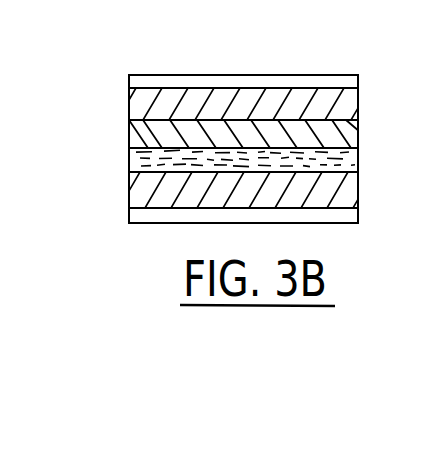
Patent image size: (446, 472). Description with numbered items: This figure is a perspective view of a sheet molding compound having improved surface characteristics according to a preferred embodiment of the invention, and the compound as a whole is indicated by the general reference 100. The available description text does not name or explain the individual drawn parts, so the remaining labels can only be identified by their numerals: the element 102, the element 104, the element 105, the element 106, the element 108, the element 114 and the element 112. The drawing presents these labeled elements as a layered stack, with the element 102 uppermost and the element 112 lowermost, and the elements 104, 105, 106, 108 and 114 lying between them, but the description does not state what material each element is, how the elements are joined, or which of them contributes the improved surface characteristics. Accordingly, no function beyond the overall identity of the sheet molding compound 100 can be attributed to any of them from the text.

The laminated structure 100 is at (271, 48).
The top layer 102 is at (357, 80).
The first layer 104 is at (359, 108).
The second layer 105 is at (135, 138).
The adhesive layer 106 is at (360, 159).
The interface 108 is at (132, 169).
The third layer 114 is at (360, 193).
The bottom layer 112 is at (360, 226).